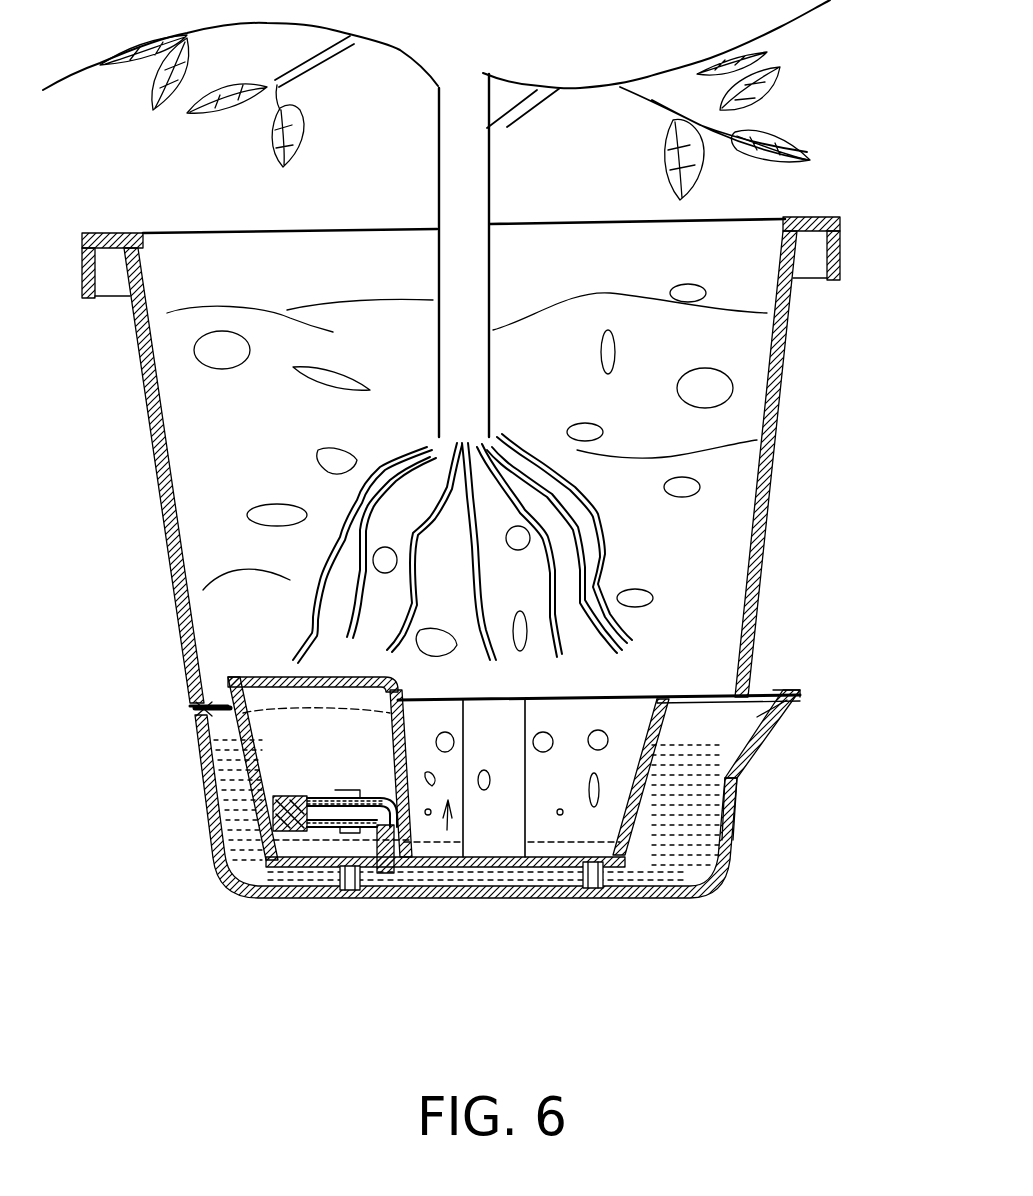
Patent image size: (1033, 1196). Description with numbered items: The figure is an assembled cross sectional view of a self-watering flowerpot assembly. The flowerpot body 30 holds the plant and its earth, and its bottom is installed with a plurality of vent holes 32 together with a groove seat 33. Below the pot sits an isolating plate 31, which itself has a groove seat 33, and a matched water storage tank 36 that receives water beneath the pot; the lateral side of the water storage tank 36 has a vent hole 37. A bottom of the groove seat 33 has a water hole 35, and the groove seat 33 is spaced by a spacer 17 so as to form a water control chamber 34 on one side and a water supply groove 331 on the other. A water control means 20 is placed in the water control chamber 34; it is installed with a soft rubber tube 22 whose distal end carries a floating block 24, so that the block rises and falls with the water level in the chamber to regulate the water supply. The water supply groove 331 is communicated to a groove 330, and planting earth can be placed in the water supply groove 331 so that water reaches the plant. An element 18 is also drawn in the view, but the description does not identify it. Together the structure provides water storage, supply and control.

The spacer 17 is at (200, 710).
The inner container wall 18 is at (262, 678).
The water control means 20 is at (303, 852).
The soft rubber tube 22 is at (337, 833).
The floating block 24 is at (263, 850).
The flowerpot body 30 is at (770, 477).
The isolating plate 31 is at (677, 693).
The vent holes 32 is at (703, 694).
The groove seat 33 is at (481, 806).
The water control chamber 34 is at (280, 773).
The water hole 35 is at (387, 873).
The water storage tank 36 is at (737, 777).
The vent hole 37 is at (787, 693).
The groove 330 is at (547, 897).
The water supply groove 331 is at (447, 830).